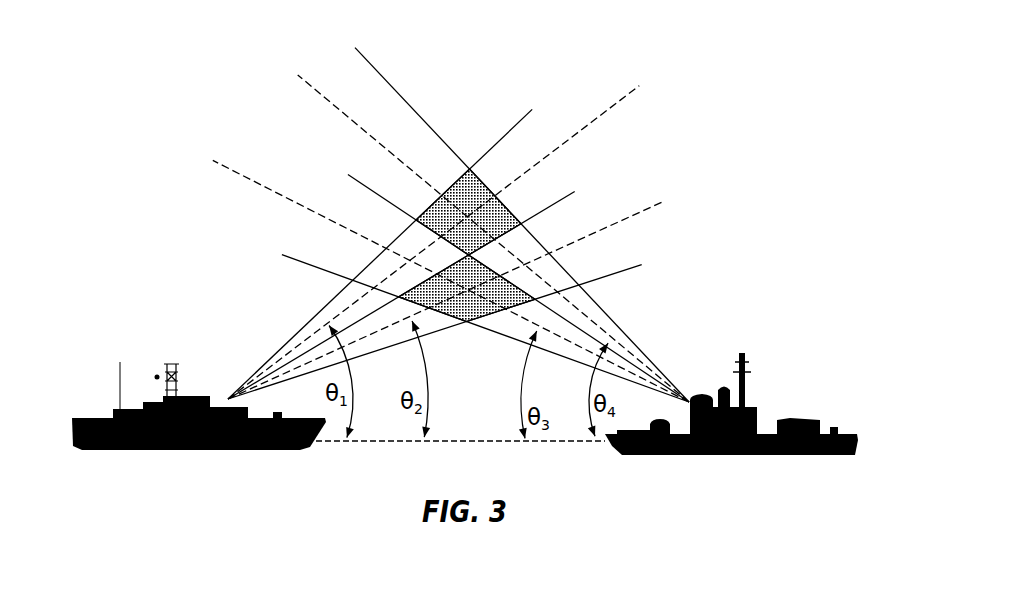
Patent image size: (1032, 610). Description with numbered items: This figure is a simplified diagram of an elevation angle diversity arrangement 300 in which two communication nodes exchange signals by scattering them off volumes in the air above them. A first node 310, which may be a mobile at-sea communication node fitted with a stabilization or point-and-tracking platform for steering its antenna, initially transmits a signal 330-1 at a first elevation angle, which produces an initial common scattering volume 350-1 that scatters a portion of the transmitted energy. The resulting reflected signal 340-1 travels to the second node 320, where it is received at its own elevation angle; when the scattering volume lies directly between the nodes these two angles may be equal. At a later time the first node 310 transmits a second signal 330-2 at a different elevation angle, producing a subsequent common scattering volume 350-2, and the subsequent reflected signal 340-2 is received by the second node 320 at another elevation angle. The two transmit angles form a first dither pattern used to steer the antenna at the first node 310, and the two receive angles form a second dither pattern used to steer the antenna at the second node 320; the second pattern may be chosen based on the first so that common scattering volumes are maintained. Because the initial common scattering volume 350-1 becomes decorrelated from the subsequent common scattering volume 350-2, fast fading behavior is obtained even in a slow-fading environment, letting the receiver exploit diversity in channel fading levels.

The cooperative radar detection system 300 is at (735, 127).
The first node 310 is at (803, 420).
The second node 320 is at (142, 449).
The initial transmitted signal 330-1 is at (330, 261).
The second beam of first ship 330-2 is at (390, 112).
The reflected signal 340-1 is at (605, 262).
The subsequent reflected signal 340-2 is at (545, 195).
The initial common scattering volume 350-1 is at (468, 305).
The subsequent common scattering volume 350-2 is at (462, 173).